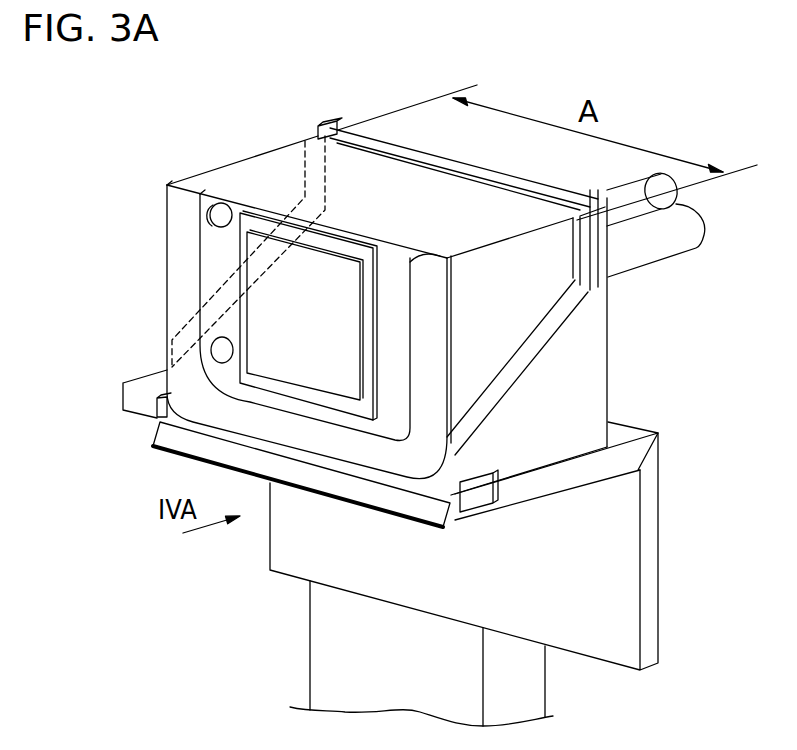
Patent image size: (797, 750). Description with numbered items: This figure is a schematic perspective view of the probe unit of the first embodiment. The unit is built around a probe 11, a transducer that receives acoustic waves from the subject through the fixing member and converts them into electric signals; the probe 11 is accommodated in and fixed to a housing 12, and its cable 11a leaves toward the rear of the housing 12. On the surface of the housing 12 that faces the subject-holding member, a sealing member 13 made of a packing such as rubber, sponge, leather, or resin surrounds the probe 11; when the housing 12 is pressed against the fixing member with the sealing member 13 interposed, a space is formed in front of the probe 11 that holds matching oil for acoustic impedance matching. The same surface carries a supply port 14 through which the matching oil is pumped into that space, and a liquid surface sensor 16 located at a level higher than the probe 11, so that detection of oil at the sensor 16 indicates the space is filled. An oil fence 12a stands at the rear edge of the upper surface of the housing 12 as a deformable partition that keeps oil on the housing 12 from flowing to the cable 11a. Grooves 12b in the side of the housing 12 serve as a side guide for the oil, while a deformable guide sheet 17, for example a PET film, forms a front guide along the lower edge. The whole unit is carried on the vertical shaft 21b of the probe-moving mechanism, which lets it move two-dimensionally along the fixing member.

The probe 11 is at (253, 312).
The cable 11a is at (650, 245).
The housing 12 is at (257, 172).
The oil fence 12a is at (337, 130).
The grooves 12b is at (317, 177).
The sealing member 13 is at (173, 255).
The supply port 14 is at (220, 350).
The liquid surface sensor 16 is at (217, 210).
The guide sheet 17 is at (162, 433).
The vertical shaft 21b is at (317, 610).